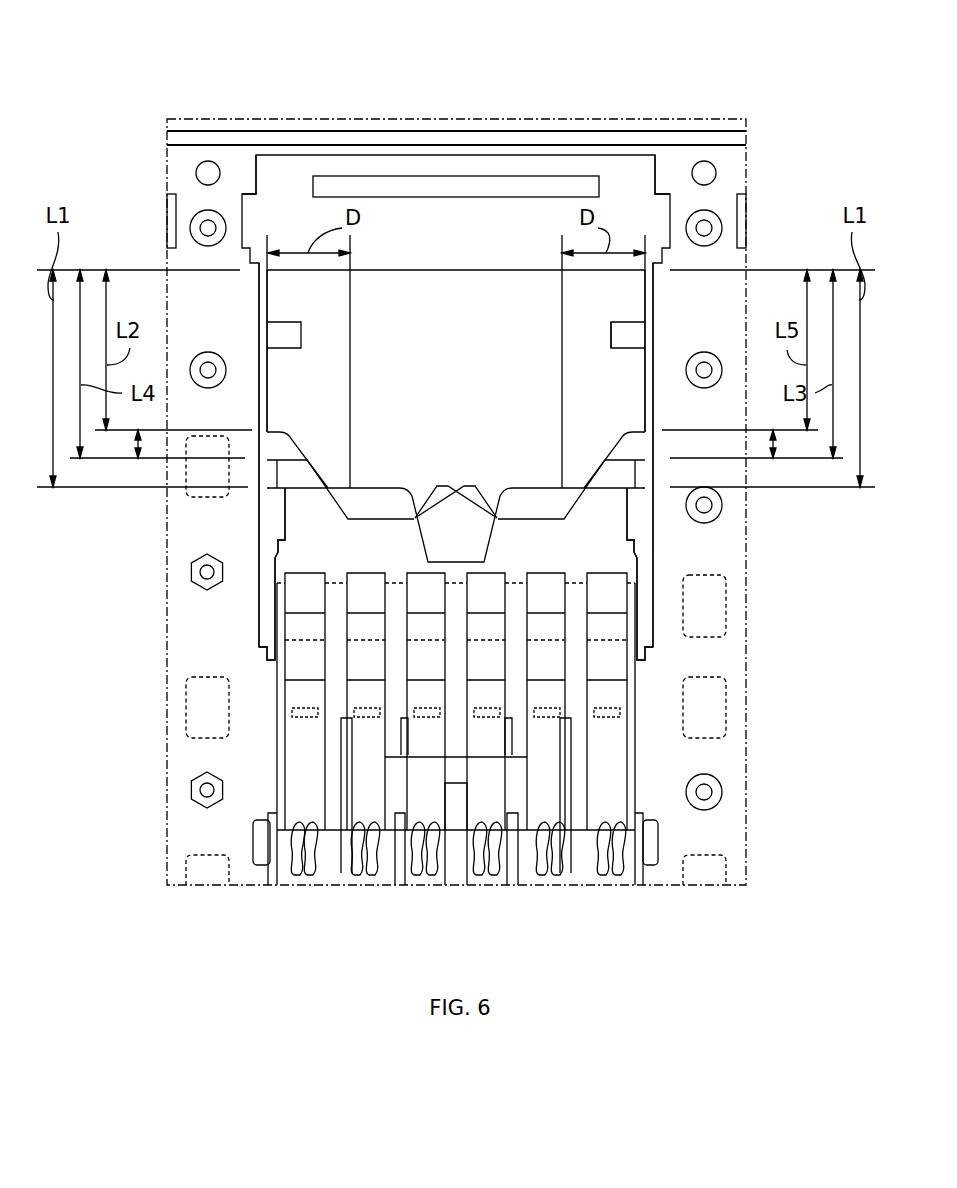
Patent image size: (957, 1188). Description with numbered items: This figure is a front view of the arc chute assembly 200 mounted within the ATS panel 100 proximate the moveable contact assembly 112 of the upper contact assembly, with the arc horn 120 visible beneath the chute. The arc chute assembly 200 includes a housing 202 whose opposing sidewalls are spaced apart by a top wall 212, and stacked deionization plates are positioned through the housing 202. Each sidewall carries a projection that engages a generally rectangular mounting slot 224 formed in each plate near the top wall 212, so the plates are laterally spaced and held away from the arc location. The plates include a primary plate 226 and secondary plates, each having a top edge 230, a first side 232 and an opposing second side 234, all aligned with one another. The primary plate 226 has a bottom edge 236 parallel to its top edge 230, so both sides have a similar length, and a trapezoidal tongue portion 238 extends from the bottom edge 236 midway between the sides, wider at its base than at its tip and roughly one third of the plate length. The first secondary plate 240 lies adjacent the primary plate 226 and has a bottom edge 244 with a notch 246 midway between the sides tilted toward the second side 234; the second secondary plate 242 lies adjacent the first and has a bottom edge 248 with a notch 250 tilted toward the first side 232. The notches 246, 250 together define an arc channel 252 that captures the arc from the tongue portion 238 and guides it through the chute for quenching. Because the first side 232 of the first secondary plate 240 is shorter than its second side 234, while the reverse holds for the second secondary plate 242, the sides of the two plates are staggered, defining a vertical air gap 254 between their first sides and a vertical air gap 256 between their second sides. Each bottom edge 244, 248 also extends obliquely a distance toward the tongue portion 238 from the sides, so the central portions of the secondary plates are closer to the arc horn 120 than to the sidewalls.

The ATS panel 100 is at (760, 50).
The moveable contact assembly 112 is at (492, 793).
The arc horn 120 is at (600, 592).
The arc chute assembly 200 is at (244, 162).
The housing 202 is at (257, 207).
The top wall 212 is at (664, 207).
The mounting slot 224 is at (630, 325).
The primary plate 226 is at (627, 336).
The top edge 230 is at (400, 270).
The first side 232 is at (259, 292).
The second side 234 is at (645, 387).
The bottom edge 236 is at (611, 492).
The tongue portion 238 is at (474, 553).
The first secondary plate 240 is at (272, 430).
The second secondary plate 242 is at (278, 490).
The bottom edge 244 is at (634, 490).
The notch 246 is at (485, 493).
The bottom edge 248 is at (642, 430).
The notch 250 is at (430, 493).
The arc channel 252 is at (462, 508).
The vertical air gap 254 is at (138, 448).
The vertical air gap 256 is at (773, 450).